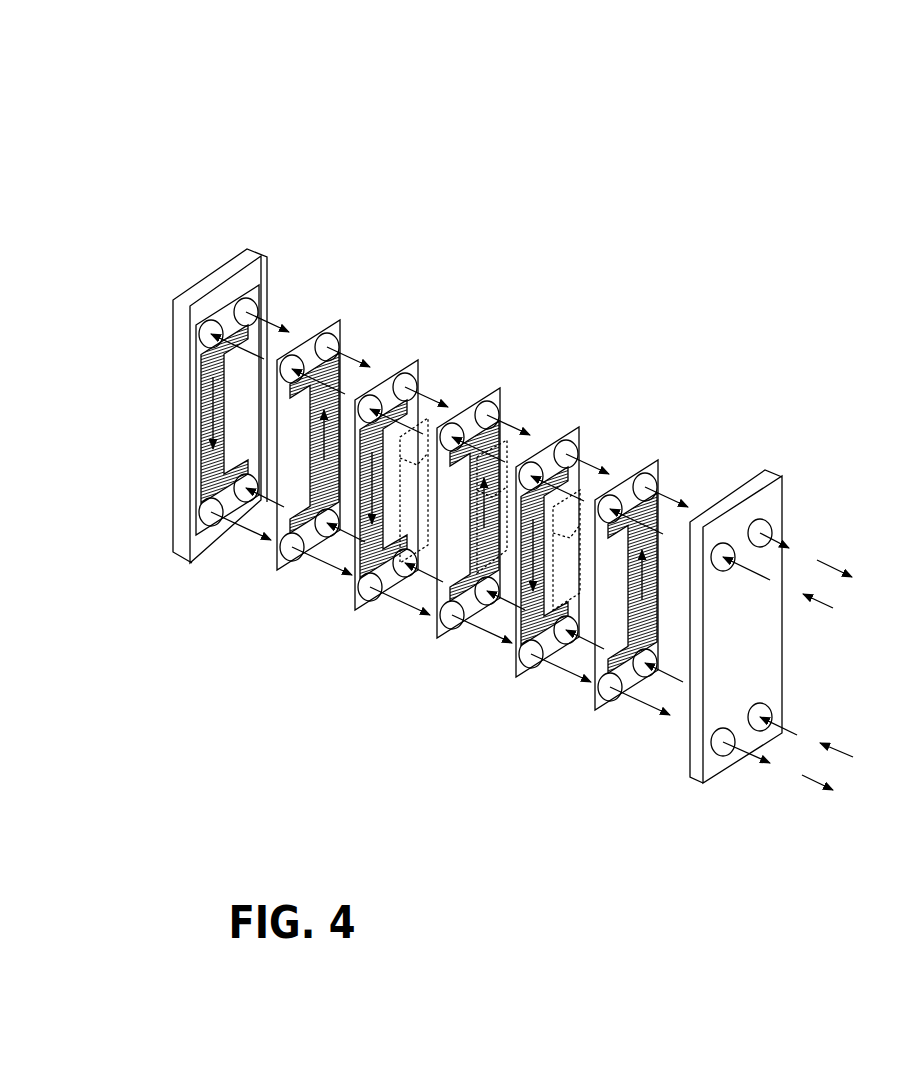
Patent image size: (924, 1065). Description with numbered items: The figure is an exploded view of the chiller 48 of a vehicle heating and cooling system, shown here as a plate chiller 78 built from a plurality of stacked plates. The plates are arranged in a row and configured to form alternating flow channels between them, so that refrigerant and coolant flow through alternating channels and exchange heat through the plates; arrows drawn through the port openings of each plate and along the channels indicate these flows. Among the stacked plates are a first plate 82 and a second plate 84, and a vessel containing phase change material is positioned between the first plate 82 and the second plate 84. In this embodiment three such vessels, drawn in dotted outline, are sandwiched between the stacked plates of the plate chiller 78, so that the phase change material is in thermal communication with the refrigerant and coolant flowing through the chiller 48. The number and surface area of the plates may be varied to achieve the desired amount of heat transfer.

The chiller 48 is at (431, 108).
The plate chiller 78 is at (599, 178).
The first plate 82 is at (470, 562).
The second plate 84 is at (527, 598).